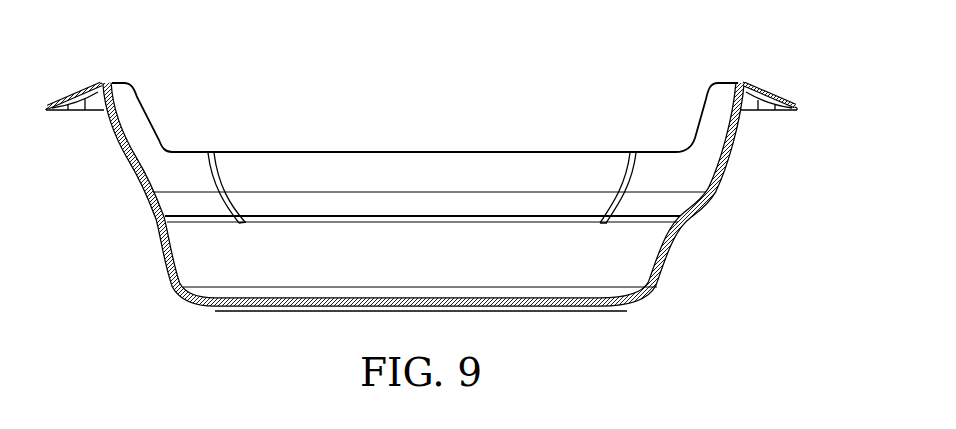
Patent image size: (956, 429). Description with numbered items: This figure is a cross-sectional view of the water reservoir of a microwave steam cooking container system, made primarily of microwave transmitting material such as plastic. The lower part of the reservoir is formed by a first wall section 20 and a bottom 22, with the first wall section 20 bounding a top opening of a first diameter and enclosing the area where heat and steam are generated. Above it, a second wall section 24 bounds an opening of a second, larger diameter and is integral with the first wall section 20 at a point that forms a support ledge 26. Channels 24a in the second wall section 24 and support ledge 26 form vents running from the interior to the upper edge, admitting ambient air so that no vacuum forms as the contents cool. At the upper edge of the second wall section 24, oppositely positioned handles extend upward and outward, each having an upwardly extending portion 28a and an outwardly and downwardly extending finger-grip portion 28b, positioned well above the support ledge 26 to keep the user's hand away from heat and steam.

The first wall section 20 is at (673, 280).
The bottom 22 is at (551, 306).
The second wall section 24 is at (720, 163).
The channels 24a is at (217, 176).
The support ledge 26 is at (154, 204).
The upwardly extending portion 28a is at (736, 124).
The finger-grip portion 28b is at (773, 80).